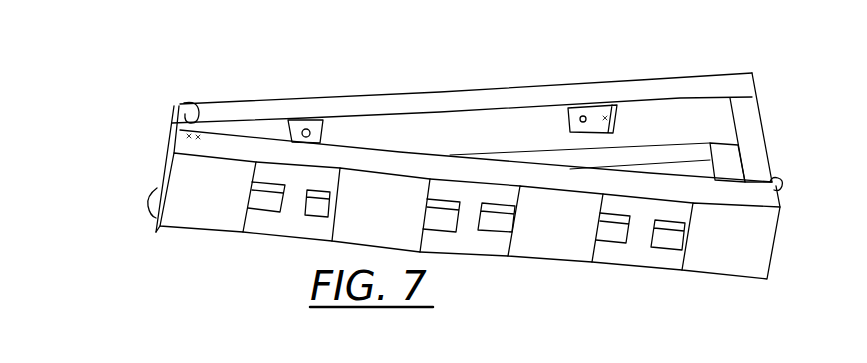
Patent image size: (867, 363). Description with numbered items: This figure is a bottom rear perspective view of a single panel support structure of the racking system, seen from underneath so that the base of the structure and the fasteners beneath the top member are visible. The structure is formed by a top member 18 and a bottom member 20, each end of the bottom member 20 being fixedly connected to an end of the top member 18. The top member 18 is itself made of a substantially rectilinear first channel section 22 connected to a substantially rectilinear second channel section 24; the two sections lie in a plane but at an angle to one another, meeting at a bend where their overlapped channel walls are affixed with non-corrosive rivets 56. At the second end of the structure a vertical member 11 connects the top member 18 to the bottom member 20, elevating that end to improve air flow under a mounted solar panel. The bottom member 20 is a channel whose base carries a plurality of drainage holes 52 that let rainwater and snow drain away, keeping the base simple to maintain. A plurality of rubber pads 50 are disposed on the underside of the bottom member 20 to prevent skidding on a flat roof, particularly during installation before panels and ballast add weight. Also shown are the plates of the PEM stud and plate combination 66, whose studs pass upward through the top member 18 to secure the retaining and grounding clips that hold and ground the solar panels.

The vertical member 11 is at (157, 233).
The top member 18 is at (519, 118).
The bottom member 20 is at (733, 187).
The first channel section 22 is at (742, 110).
The second channel section 24 is at (713, 80).
The rubber pads 50 is at (556, 238).
The drainage holes 52 is at (667, 248).
The non-corrosive rivets 56 is at (184, 103).
The PEM stud and plate combination 66 is at (325, 120).